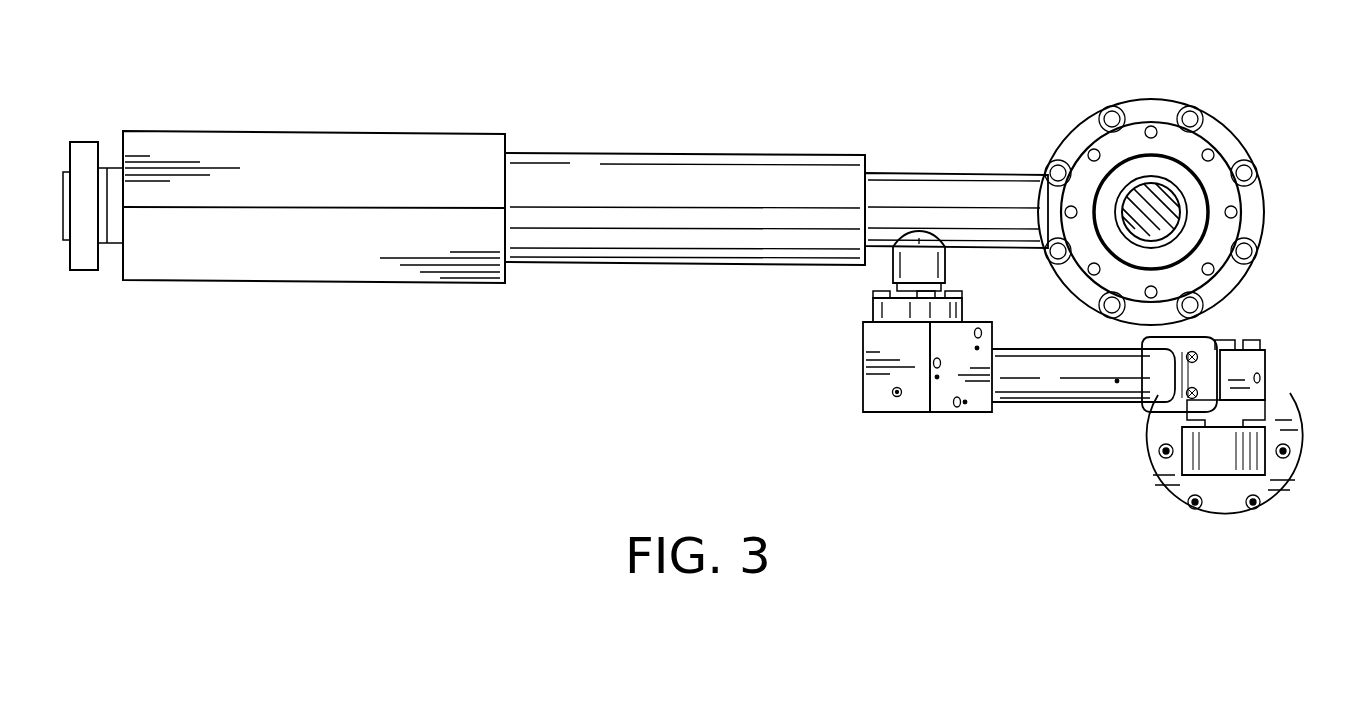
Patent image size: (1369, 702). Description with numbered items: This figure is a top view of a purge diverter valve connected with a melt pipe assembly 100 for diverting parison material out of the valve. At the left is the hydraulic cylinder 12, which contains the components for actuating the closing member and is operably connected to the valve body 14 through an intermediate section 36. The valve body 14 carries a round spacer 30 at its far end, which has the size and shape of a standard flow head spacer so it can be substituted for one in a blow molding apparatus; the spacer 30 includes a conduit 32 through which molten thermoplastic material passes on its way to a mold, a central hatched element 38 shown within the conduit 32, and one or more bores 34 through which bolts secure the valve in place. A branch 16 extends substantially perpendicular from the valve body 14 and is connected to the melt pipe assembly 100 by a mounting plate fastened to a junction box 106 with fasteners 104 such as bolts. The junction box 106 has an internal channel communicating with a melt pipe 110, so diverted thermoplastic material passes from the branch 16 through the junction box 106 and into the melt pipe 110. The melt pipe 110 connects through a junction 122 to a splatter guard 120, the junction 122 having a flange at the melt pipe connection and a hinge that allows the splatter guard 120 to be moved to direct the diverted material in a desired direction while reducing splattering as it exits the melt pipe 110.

The hydraulic cylinder 12 is at (181, 259).
The valve body 14 is at (980, 195).
The branch 16 is at (913, 260).
The spacer 30 is at (1228, 198).
The conduit 32 is at (1185, 223).
The bores 34 is at (1210, 154).
The intermediate section 36 is at (597, 187).
The shaft 38 is at (1158, 198).
The melt pipe assembly 100 is at (980, 413).
The fasteners 104 is at (882, 293).
The junction box 106 is at (875, 385).
The melt pipe 110 is at (1058, 398).
The splatter guard 120 is at (1223, 455).
The junction 122 is at (1195, 355).